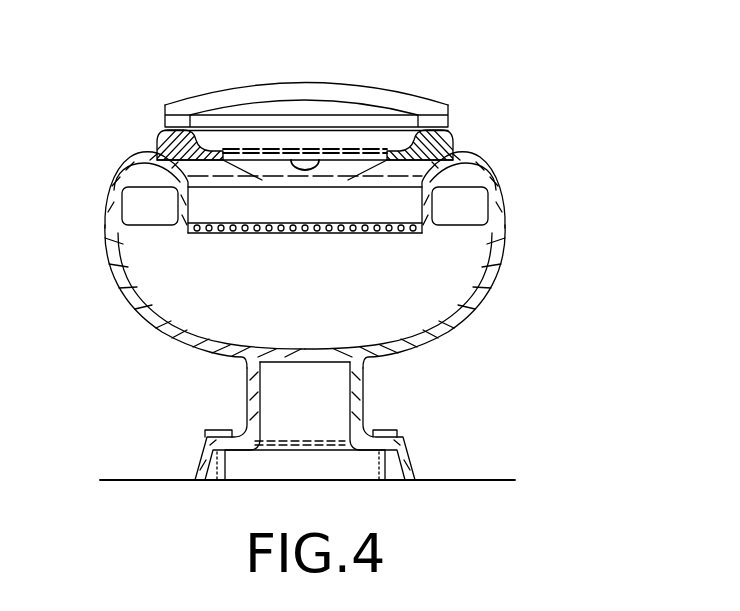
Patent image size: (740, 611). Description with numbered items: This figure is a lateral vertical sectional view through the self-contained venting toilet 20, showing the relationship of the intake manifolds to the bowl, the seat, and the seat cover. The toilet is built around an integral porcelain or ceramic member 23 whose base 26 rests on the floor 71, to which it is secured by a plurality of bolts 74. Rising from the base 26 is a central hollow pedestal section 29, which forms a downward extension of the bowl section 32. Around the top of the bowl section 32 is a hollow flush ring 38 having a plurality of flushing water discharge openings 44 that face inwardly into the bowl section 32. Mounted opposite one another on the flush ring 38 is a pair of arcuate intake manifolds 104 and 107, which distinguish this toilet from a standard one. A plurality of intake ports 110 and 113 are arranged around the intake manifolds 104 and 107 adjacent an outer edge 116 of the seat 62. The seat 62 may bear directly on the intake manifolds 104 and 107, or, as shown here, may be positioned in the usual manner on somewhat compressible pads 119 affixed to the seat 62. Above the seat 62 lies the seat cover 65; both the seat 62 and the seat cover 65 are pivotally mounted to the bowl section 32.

The self-contained venting toilet 20 is at (208, 48).
The seat cover 65 is at (301, 86).
The seat 62 is at (176, 148).
The outer edge of seat 116 is at (183, 157).
The intake manifold 107 is at (453, 154).
The intake manifold 104 is at (127, 160).
The flush ring 38 is at (503, 204).
The intake ports 110 is at (190, 172).
The intake ports 113 is at (440, 173).
The compressible pads 119 is at (305, 168).
The flushing water discharge openings 44 is at (245, 233).
The integral porcelain or ceramic member 23 is at (507, 283).
The bowl section 32 is at (130, 304).
The central hollow pedestal section 29 is at (247, 387).
The bolts 74 is at (223, 429).
The base 26 is at (415, 458).
The floor 71 is at (155, 480).